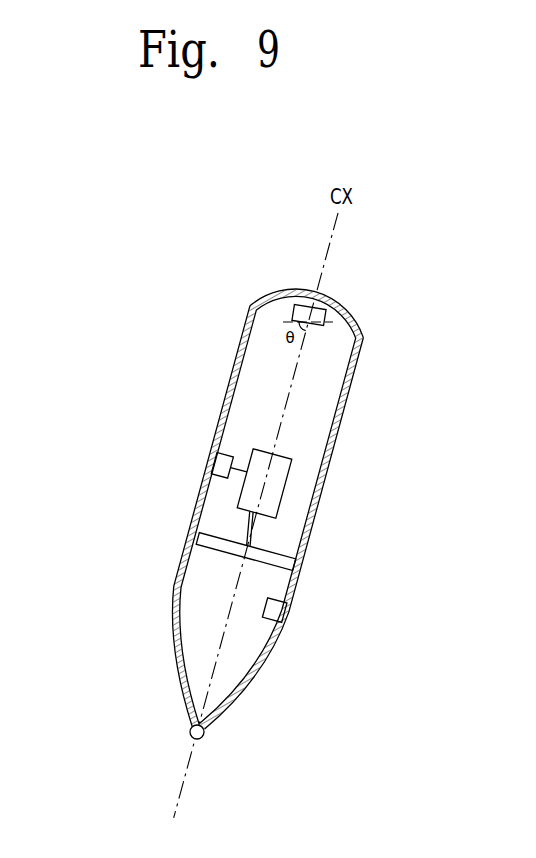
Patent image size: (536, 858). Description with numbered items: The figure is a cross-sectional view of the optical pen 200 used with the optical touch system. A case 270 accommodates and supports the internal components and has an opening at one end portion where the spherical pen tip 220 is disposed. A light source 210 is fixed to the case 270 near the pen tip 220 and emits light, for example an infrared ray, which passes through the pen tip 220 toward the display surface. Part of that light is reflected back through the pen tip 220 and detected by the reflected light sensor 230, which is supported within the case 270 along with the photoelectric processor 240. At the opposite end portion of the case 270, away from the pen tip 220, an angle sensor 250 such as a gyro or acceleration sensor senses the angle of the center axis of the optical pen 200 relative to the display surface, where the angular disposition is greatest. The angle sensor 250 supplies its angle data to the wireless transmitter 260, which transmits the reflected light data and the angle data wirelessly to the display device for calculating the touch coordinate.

The optical pen 200 is at (128, 391).
The light source 210 is at (283, 611).
The pen tip 220 is at (205, 734).
The reflected light sensor 230 is at (295, 545).
The photoelectric processor 240 is at (290, 478).
The angle sensor 250 is at (318, 312).
The wireless transmitter 260 is at (213, 465).
The case 270 is at (353, 383).